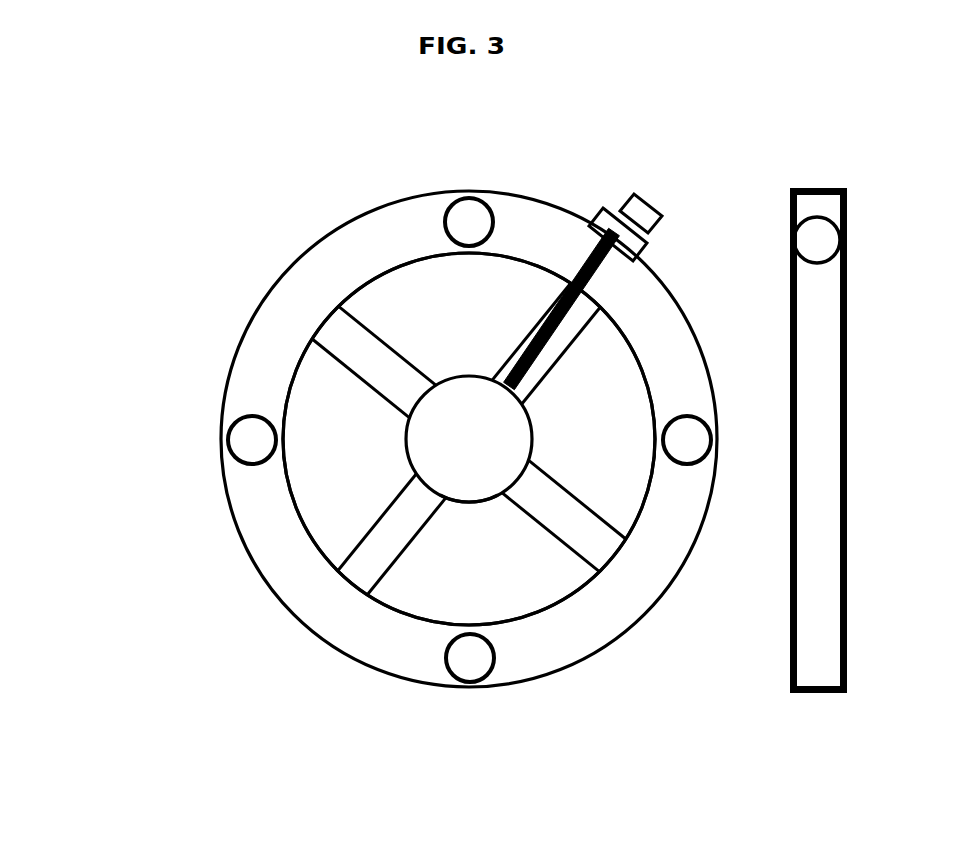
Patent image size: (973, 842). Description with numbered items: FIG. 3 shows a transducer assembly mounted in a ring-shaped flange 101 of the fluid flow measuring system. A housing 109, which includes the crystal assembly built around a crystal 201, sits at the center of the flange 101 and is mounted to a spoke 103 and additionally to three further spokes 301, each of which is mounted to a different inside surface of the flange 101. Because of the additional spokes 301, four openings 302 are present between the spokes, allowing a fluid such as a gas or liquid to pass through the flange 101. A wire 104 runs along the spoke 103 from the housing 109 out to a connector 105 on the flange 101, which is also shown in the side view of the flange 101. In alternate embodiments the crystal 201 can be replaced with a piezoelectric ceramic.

The flange 101 is at (584, 486).
The spoke 103 is at (557, 363).
The wire 104 is at (434, 245).
The connector 105 is at (743, 165).
The housing 109 is at (478, 510).
The crystal 201 is at (469, 439).
The spokes 301 is at (358, 537).
The openings 302 is at (332, 394).